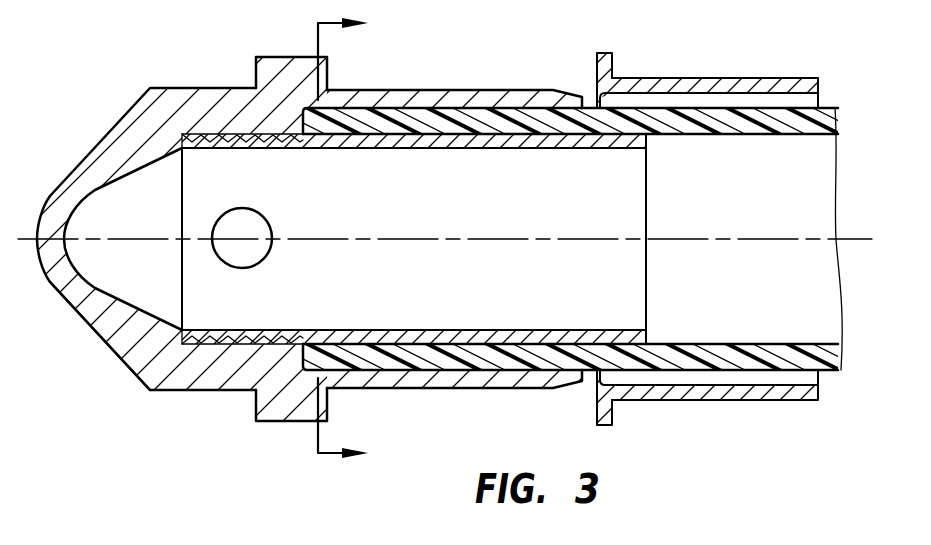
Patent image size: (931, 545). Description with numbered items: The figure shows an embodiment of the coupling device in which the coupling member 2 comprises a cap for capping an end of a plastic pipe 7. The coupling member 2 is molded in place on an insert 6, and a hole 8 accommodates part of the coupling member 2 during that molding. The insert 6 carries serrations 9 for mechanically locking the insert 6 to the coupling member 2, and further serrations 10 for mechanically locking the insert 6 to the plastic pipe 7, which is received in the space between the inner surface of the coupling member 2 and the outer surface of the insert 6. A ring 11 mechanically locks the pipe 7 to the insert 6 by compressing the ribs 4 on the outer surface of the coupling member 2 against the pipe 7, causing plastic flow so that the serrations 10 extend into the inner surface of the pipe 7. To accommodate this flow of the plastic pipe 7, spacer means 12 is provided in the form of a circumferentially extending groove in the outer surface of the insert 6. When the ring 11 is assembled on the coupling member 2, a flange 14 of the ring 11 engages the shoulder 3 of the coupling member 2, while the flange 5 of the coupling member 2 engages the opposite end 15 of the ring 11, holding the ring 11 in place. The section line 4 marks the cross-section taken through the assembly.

The coupling member 2 is at (99, 334).
The shoulder 3 is at (284, 422).
The compression ribs 4 is at (356, 243).
The flange 5 is at (568, 89).
The insert 6 is at (652, 182).
The plastic pipe 7 is at (730, 138).
The hole 8 is at (233, 222).
The serrations 9 is at (198, 388).
The serrations 10 is at (363, 148).
The ring 11 is at (703, 75).
The spacer means 12 is at (310, 143).
The flange 14 is at (613, 58).
The opposite end 15 is at (820, 85).